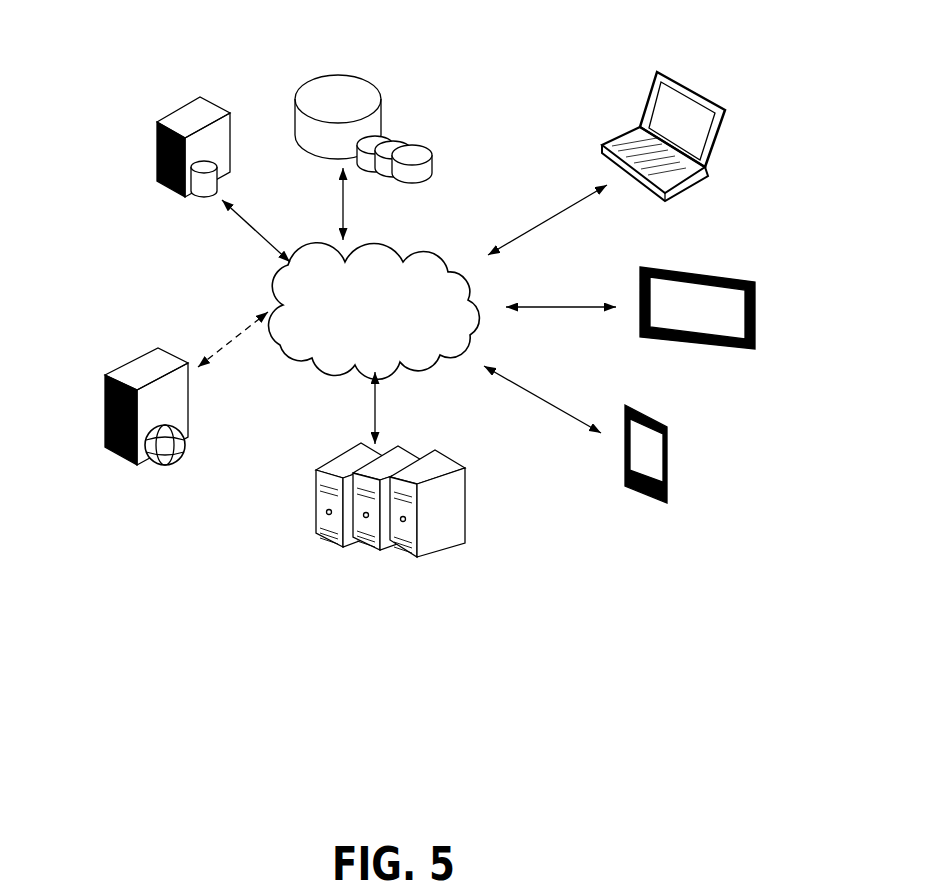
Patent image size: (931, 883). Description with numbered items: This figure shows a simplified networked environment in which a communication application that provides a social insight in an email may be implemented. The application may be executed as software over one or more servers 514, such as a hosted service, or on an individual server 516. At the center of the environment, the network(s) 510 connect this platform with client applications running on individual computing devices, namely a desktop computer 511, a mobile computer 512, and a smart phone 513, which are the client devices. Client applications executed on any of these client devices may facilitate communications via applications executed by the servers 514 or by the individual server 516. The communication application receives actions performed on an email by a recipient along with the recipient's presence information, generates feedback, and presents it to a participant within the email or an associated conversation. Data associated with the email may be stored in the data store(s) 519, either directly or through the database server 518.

The network(s) 510 is at (378, 237).
The desktop computer 511 is at (695, 70).
The mobile computer 512 is at (730, 250).
The smart phone 513 is at (675, 420).
The servers 514 is at (340, 448).
The individual server 516 is at (127, 360).
The database server 518 is at (193, 206).
The data store(s) 519 is at (352, 50).